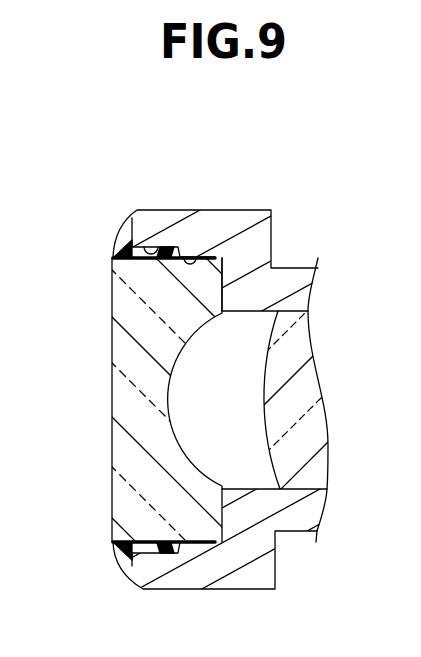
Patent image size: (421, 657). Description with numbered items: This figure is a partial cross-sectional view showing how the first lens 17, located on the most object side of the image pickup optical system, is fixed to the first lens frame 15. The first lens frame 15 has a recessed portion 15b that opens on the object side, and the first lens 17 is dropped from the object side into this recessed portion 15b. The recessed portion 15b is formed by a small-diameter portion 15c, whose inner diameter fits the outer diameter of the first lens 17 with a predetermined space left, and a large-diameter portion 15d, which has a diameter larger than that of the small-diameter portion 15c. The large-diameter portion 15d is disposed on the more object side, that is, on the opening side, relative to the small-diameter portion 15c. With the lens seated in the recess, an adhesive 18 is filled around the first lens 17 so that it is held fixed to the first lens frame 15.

The first lens frame 15 is at (251, 210).
The recessed portion 15b is at (222, 290).
The small-diameter portion 15c is at (192, 257).
The large-diameter portion 15d is at (157, 247).
The first lens 17 is at (112, 403).
The adhesive 18 is at (122, 246).